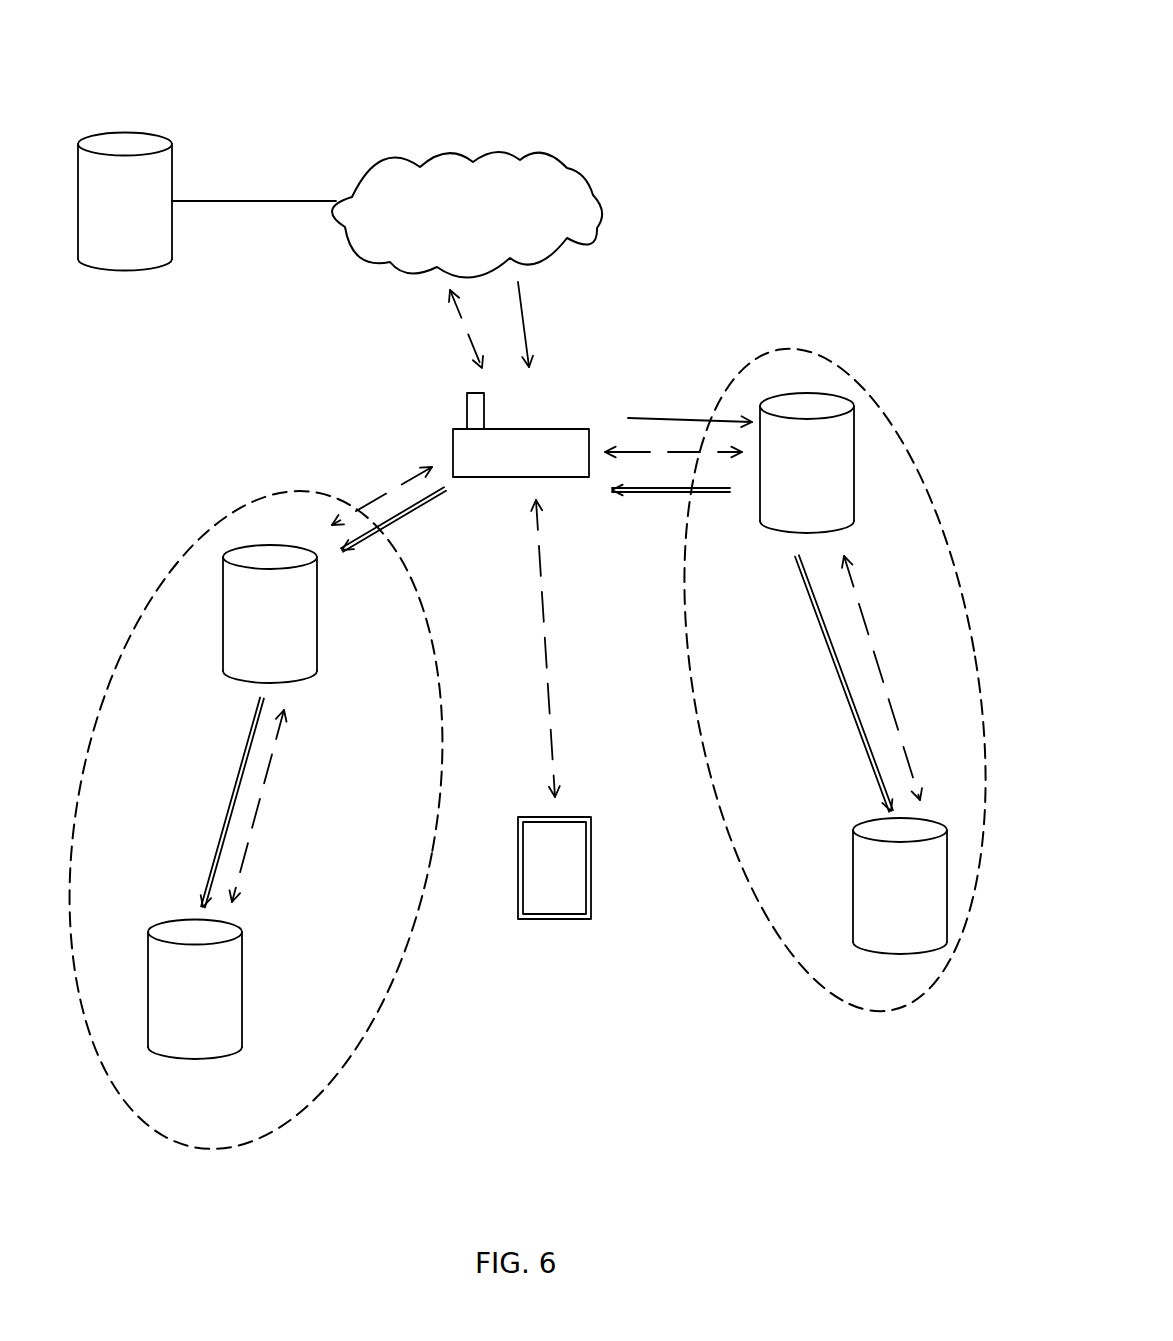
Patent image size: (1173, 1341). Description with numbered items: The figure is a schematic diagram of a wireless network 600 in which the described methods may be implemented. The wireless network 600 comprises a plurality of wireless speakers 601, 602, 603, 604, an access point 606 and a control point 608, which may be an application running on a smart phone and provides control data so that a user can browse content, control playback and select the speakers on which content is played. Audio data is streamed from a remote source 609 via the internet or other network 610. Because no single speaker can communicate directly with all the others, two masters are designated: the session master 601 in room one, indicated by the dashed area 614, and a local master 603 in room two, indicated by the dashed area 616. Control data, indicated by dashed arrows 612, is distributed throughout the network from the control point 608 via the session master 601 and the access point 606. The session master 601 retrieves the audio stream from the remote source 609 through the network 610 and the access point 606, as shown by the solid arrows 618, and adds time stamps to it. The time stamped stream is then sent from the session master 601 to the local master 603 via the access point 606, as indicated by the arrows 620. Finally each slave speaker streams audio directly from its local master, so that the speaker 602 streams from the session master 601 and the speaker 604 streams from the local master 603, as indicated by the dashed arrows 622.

The wireless network 600 is at (720, 103).
The session master 601 is at (790, 478).
The slave speaker 602 is at (883, 905).
The local master 603 is at (257, 631).
The slave speaker 604 is at (175, 1017).
The access point 606 is at (495, 463).
The control point 608 is at (535, 883).
The remote source 609 is at (106, 254).
The network 610 is at (448, 218).
The control data 612 is at (470, 341).
The dashed area 614 is at (906, 458).
The dashed area 616 is at (414, 920).
The solid arrows 618 is at (527, 322).
The arrows 620 is at (661, 492).
The dashed arrows 622 is at (838, 673).